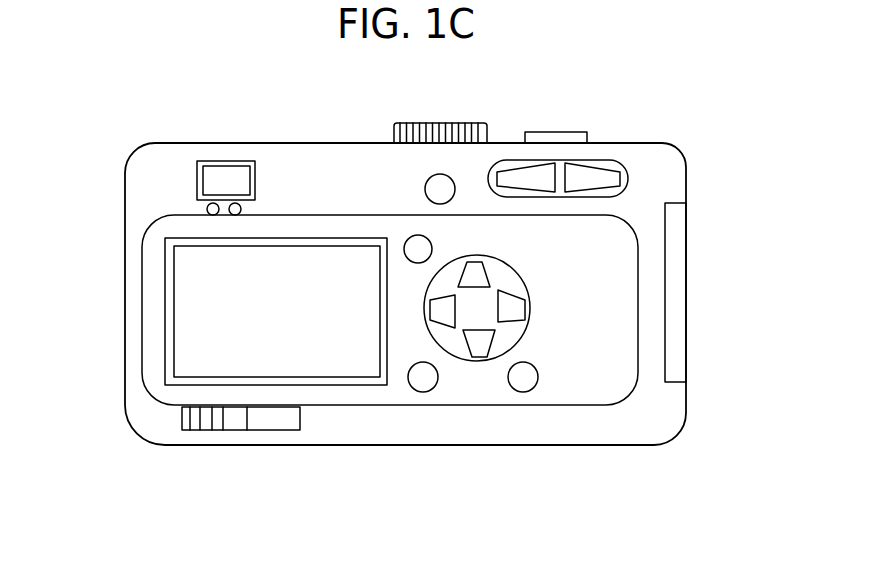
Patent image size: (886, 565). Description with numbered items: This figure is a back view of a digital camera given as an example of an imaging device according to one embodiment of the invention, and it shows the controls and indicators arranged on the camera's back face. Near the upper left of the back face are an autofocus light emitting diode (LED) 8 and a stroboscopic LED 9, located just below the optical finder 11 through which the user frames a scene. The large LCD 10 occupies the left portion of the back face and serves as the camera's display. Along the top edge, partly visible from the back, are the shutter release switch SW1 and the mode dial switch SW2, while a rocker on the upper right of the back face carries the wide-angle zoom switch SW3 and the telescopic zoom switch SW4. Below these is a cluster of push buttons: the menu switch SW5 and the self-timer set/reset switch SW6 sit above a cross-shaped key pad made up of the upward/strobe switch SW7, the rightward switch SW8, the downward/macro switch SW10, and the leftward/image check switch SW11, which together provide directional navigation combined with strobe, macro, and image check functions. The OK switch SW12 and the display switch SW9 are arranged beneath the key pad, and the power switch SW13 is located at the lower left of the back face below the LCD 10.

The autofocus light emitting diode (LED) 8 is at (210, 207).
The stroboscopic LED 9 is at (233, 206).
The LCD 10 is at (280, 350).
The optical finder 11 is at (237, 177).
The shutter release switch SW1 is at (563, 135).
The mode dial SW2 is at (412, 128).
The wide-angle zoom switch SW3 is at (540, 175).
The telescopic zoom switch SW4 is at (608, 178).
The menu switch SW5 is at (418, 249).
The self-timer set/reset switch SW6 is at (440, 189).
The upward/strobe switch SW7 is at (478, 275).
The rightward switch SW8 is at (510, 310).
The display switch SW9 is at (523, 377).
The downward/macro switch SW10 is at (443, 312).
The leftward/image check switch SW11 is at (480, 345).
The OK switch SW12 is at (423, 377).
The power switch SW13 is at (193, 420).